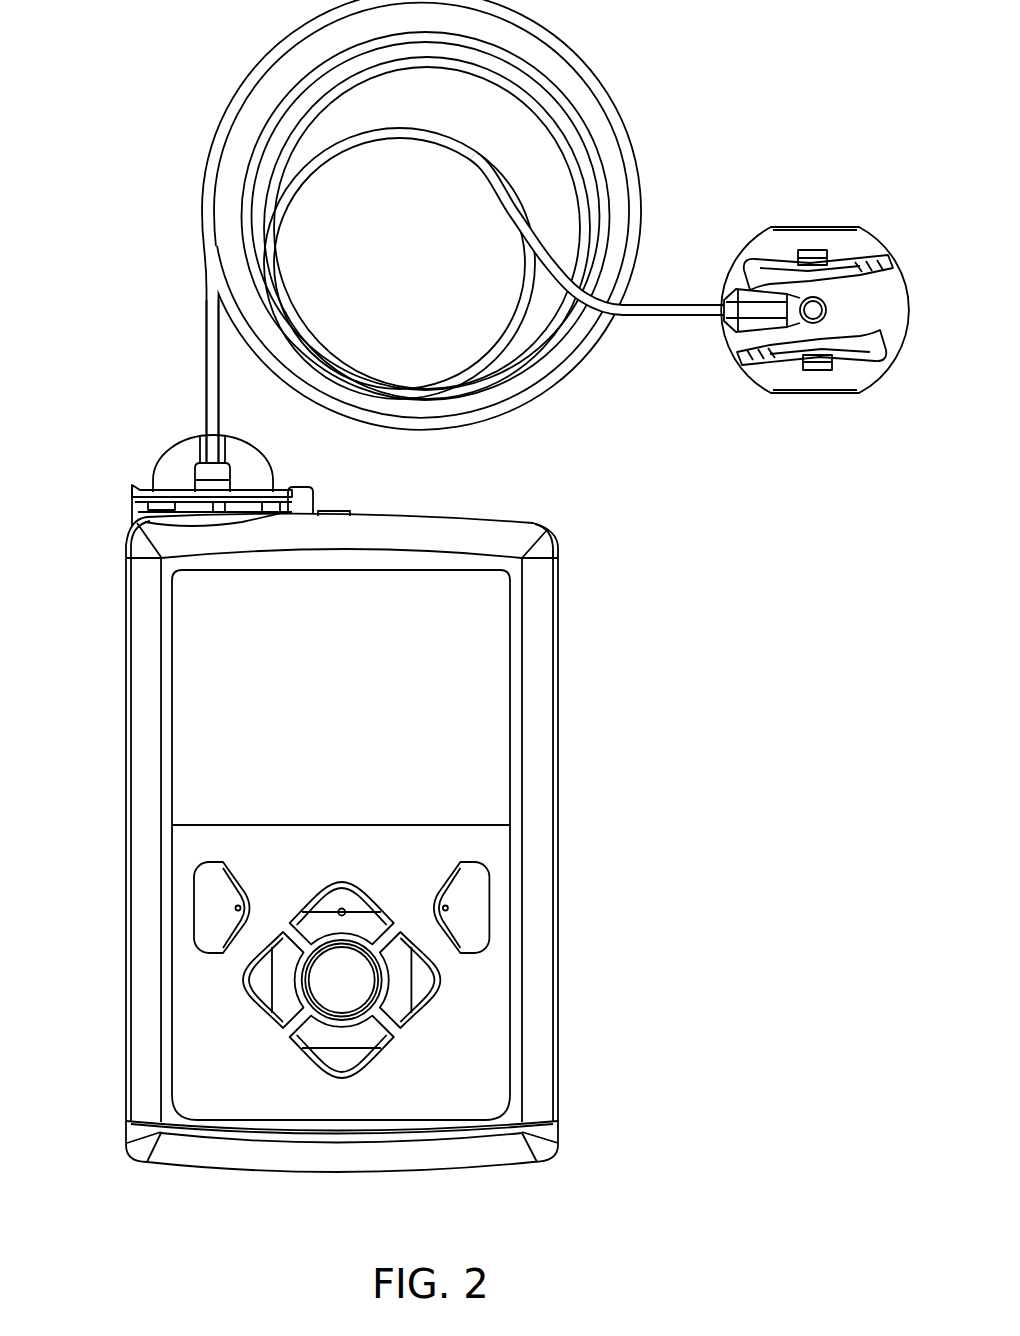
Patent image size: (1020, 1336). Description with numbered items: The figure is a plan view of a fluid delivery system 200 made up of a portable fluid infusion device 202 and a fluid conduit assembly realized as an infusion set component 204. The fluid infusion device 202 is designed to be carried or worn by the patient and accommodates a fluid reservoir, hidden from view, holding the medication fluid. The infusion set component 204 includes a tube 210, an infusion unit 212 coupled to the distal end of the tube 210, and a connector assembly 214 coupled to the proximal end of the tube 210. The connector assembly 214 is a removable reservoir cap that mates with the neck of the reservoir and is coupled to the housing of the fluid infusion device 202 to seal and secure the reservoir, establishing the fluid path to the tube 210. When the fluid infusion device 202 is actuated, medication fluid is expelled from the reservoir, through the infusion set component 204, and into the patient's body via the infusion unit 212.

The fluid delivery system 200 is at (474, 586).
The fluid infusion device 202 is at (558, 567).
The infusion set component 204 is at (712, 82).
The tube 210 is at (204, 229).
The infusion unit 212 is at (810, 393).
The connector assembly 214 is at (172, 438).